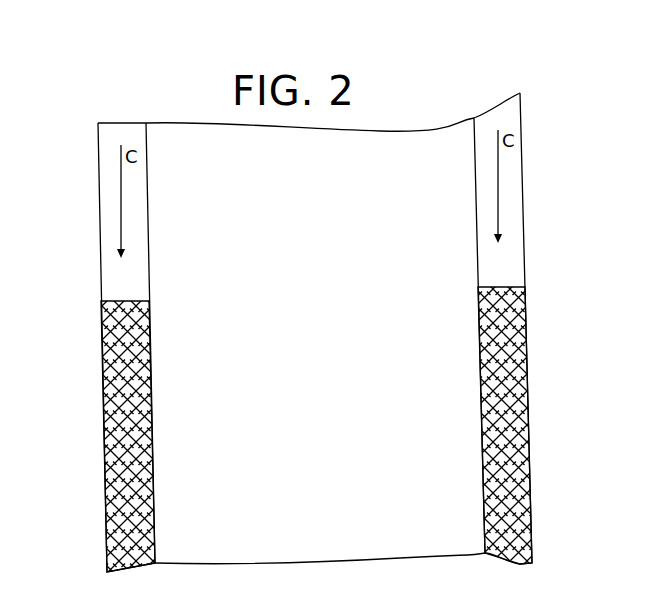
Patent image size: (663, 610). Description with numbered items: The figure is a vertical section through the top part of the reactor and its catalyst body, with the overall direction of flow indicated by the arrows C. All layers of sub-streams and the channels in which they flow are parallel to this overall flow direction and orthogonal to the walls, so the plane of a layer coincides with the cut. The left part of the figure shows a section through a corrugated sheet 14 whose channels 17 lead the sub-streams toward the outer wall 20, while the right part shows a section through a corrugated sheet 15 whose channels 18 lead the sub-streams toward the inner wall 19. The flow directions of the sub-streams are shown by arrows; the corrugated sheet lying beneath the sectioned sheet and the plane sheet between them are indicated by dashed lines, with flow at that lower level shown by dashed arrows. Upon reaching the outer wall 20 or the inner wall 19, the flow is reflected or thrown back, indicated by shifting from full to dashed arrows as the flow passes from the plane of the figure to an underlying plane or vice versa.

The corrugated sheet 14 is at (148, 340).
The corrugated sheet 15 is at (517, 321).
The channels 17 is at (137, 366).
The channels 18 is at (510, 351).
The inner wall 19 is at (147, 195).
The outer wall 20 is at (98, 200).